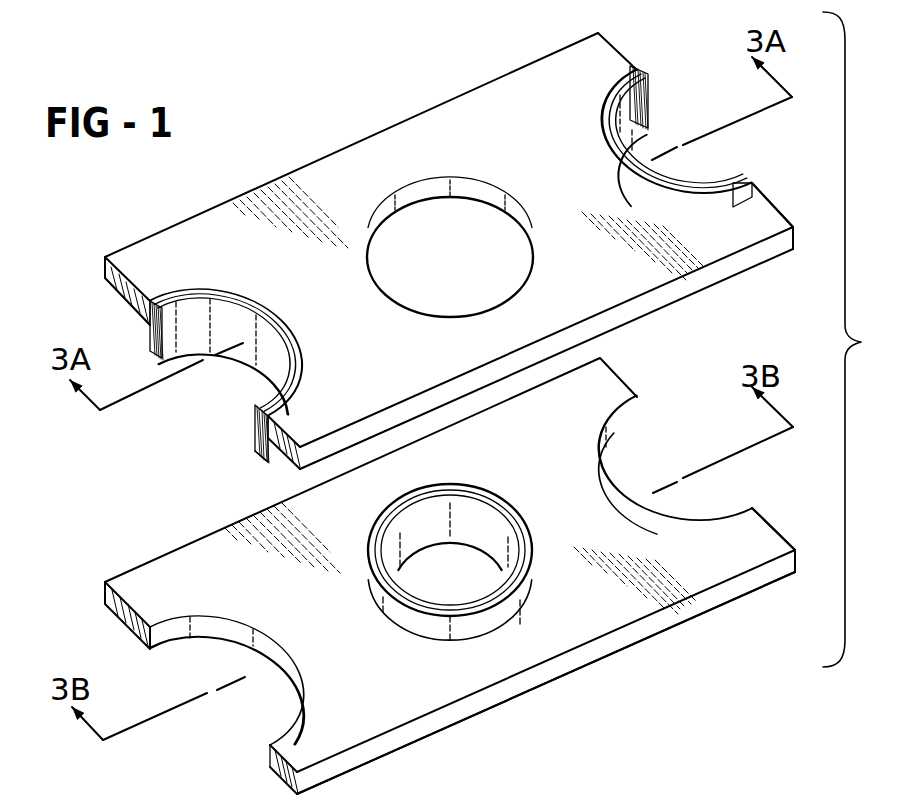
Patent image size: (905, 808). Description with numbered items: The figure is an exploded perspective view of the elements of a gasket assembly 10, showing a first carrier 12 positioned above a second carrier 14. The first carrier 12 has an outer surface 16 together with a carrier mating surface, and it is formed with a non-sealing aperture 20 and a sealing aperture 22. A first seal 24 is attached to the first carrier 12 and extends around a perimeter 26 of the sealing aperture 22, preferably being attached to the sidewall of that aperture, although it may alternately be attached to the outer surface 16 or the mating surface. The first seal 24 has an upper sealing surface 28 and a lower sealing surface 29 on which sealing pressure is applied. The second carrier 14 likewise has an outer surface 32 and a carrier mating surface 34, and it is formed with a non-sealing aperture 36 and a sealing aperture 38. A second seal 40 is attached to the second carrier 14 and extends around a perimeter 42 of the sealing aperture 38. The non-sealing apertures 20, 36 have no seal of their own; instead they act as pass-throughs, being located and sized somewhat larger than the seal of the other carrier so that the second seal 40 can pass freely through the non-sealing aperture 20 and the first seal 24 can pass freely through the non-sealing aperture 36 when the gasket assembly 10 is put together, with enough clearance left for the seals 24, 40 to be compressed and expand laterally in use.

The gasket assembly 10 is at (310, 112).
The first carrier 12 is at (562, 42).
The second carrier 14 is at (627, 377).
The outer surface 16 is at (603, 58).
The non-sealing aperture 20 is at (467, 226).
The sealing aperture 22 is at (227, 373).
The first seal 24 is at (258, 360).
The perimeter 26 is at (762, 204).
The upper sealing surface 28 is at (180, 300).
The lower sealing surface 29 is at (260, 455).
The outer surface 32 is at (447, 733).
The carrier mating surface 34 is at (737, 540).
The non-sealing aperture 36 is at (253, 697).
The sealing aperture 38 is at (455, 557).
The second seal 40 is at (380, 590).
The perimeter 42 is at (530, 580).